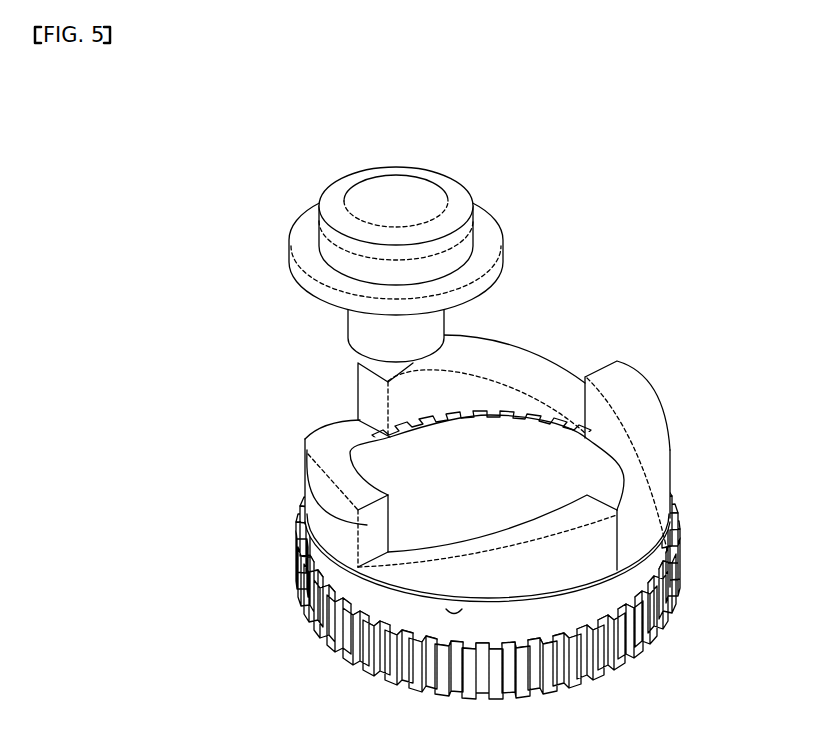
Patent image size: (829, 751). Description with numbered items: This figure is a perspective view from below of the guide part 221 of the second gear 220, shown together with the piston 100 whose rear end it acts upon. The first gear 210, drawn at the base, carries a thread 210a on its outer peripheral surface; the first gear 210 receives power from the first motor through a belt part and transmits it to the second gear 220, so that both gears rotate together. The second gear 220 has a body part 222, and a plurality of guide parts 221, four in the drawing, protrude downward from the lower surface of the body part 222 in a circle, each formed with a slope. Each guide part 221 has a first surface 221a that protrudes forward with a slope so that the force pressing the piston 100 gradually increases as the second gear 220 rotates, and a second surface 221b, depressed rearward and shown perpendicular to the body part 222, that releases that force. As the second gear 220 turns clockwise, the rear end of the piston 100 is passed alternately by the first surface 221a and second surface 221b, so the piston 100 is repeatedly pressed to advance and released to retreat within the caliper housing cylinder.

The piston 100 is at (489, 184).
The first gear 210 is at (543, 555).
The thread 210a is at (657, 634).
The second gear 220 is at (452, 444).
The guide part 221 is at (259, 493).
The first surface 221a is at (319, 452).
The second surface 221b is at (320, 534).
The body part 222 is at (493, 440).